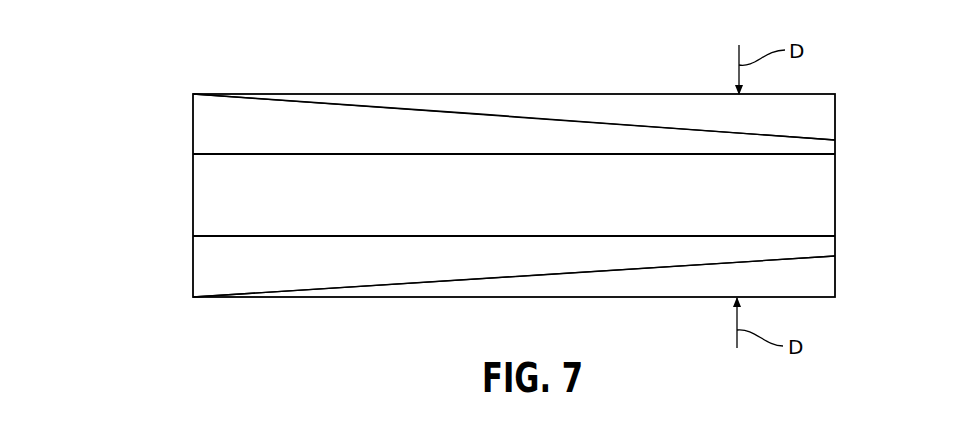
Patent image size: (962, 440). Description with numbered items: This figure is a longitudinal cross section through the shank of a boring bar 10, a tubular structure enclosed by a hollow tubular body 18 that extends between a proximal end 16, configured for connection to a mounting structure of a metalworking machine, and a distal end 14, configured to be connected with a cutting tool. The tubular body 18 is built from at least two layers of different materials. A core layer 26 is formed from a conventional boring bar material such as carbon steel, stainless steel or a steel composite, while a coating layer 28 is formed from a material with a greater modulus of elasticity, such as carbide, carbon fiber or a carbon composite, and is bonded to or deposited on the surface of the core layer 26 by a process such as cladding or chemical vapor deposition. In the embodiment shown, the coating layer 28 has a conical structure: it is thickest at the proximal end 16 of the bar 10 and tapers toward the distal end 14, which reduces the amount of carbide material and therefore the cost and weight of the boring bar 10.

The boring bar 10 is at (602, 67).
The distal end 14 is at (230, 195).
The proximal end 16 is at (808, 193).
The tubular body 18 is at (838, 132).
The core layer 26 is at (478, 130).
The coating layer 28 is at (357, 107).